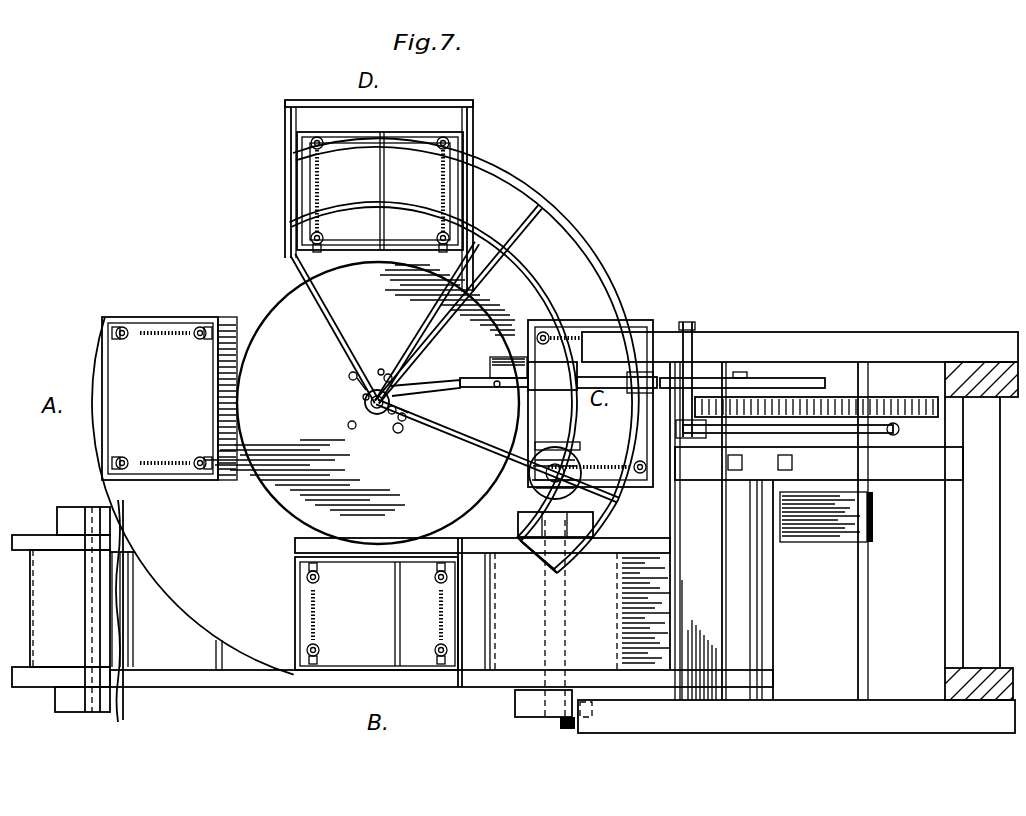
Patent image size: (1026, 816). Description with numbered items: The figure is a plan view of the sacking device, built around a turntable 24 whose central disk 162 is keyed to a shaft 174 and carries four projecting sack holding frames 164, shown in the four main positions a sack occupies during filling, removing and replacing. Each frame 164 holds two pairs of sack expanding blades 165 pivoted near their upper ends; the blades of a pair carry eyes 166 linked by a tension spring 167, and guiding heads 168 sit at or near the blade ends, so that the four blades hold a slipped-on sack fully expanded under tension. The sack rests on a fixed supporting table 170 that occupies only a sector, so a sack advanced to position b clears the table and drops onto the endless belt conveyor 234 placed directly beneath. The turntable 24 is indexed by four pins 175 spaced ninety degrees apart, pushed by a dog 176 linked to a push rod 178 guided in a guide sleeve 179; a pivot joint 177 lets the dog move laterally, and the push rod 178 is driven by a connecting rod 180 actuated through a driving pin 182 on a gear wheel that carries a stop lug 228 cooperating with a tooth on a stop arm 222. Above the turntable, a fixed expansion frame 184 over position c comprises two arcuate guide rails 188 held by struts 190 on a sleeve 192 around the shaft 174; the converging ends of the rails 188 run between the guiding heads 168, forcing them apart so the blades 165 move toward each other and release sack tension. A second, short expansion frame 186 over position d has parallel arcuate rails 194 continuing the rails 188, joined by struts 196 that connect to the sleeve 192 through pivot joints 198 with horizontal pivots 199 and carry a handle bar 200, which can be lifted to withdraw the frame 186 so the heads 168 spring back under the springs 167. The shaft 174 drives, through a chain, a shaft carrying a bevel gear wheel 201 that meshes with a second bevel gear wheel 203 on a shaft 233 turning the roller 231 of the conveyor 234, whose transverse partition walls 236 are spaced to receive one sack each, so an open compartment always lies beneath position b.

The turntable 24 is at (211, 212).
The central disk 162 is at (290, 302).
The sack holding frame 164 is at (150, 315).
The sack expanding blade 165 is at (322, 577).
The eye 166 is at (135, 340).
The tension spring 167 is at (170, 458).
The guiding head 168 is at (318, 234).
The supporting table 170 is at (193, 610).
The shaft 174 is at (365, 403).
The pin 175 is at (353, 430).
The dog 176 is at (455, 378).
The pivot joint 177 is at (470, 384).
The push rod 178 is at (499, 388).
The guide sleeve 179 is at (583, 370).
The connecting rod 180 is at (708, 378).
The driving pin 182 is at (750, 390).
The expansion frame 184 is at (619, 517).
The expansion frame 186 is at (405, 160).
The arcuate guide rail 188 is at (517, 277).
The strut 190 is at (527, 222).
The sleeve 192 is at (363, 398).
The arcuate rail 194 is at (347, 212).
The strut 196 is at (333, 291).
The pivot joint 198 is at (388, 375).
The horizontal pivot 199 is at (352, 376).
The handle bar 200 is at (458, 97).
The bevel gear wheel 201 is at (540, 490).
The bevel gear wheel 203 is at (543, 445).
The stop arm 222 is at (826, 438).
The stop lug 228 is at (755, 424).
The roller 231 is at (480, 677).
The shaft 233 is at (553, 720).
The endless belt conveyor 234 is at (229, 694).
The transverse partition wall 236 is at (492, 623).